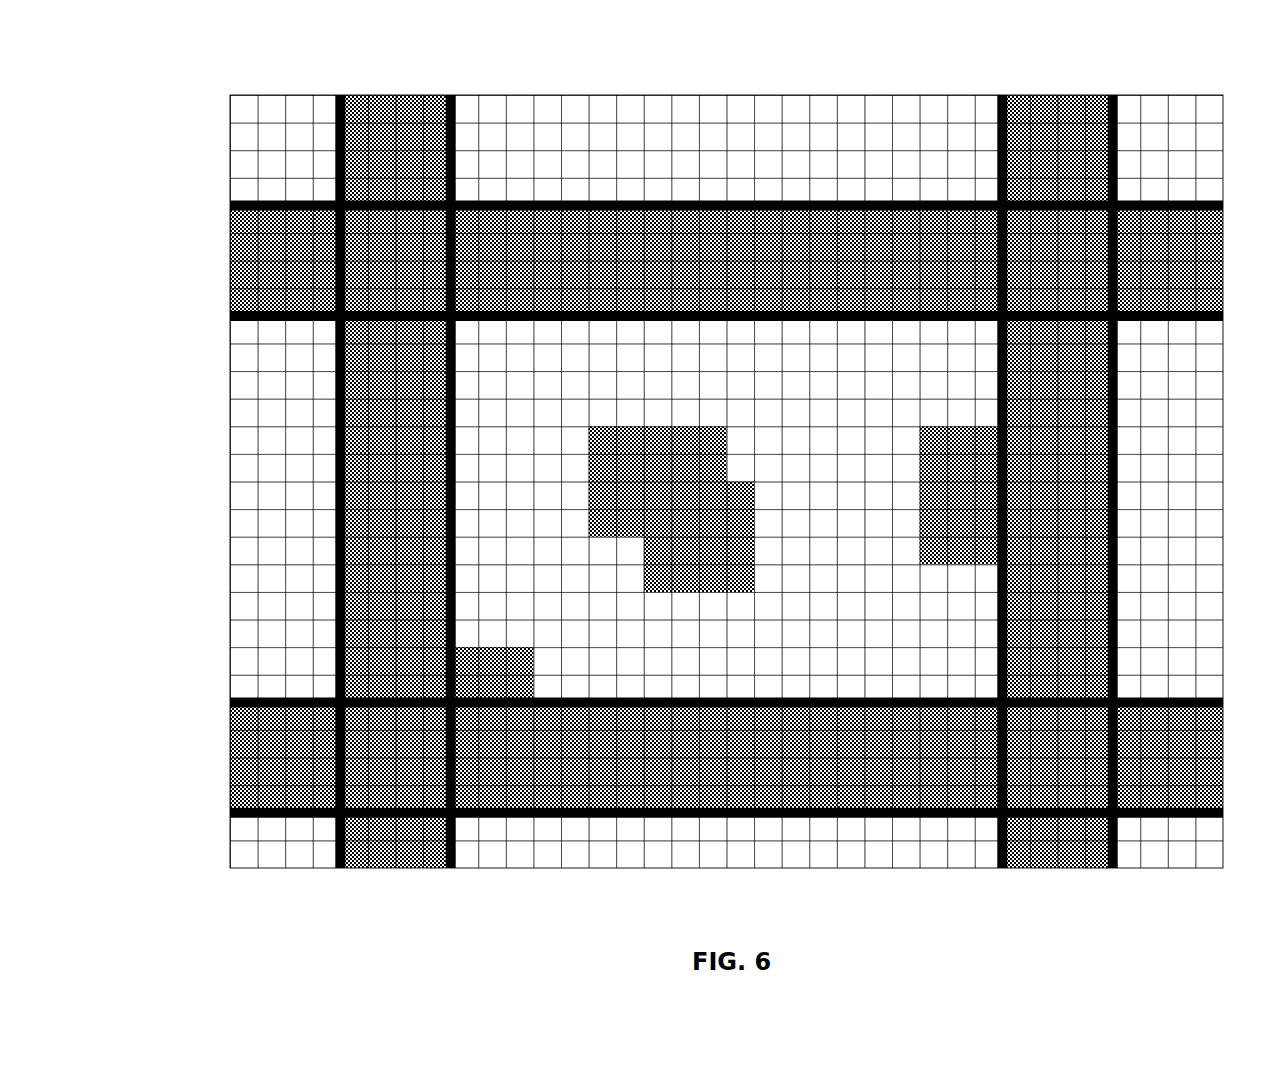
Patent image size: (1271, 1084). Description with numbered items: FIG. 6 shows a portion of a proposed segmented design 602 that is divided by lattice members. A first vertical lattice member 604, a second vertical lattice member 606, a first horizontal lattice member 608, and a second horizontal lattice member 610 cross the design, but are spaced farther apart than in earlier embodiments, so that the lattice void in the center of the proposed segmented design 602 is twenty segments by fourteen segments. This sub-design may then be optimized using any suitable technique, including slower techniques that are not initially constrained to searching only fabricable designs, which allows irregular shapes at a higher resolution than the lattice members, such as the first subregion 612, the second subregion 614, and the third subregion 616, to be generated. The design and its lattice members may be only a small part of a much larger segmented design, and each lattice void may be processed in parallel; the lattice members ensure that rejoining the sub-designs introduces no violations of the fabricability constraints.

The proposed segmented design 602 is at (659, 492).
The first vertical lattice member 604 is at (442, 83).
The second vertical lattice member 606 is at (1104, 83).
The first horizontal lattice member 608 is at (218, 198).
The second horizontal lattice member 610 is at (218, 698).
The first subregion 612 is at (598, 417).
The second subregion 614 is at (931, 417).
The third subregion 616 is at (530, 641).